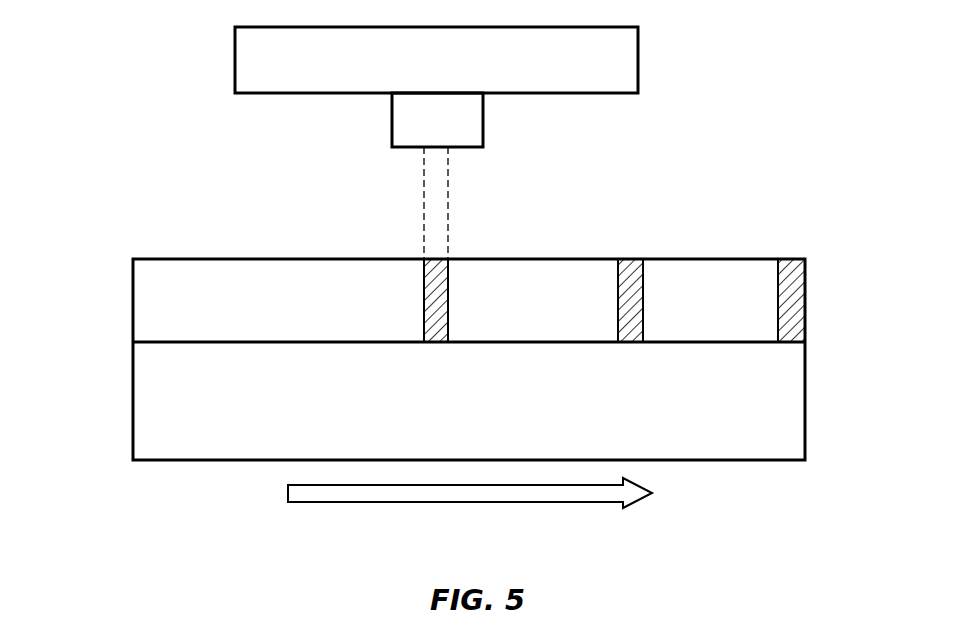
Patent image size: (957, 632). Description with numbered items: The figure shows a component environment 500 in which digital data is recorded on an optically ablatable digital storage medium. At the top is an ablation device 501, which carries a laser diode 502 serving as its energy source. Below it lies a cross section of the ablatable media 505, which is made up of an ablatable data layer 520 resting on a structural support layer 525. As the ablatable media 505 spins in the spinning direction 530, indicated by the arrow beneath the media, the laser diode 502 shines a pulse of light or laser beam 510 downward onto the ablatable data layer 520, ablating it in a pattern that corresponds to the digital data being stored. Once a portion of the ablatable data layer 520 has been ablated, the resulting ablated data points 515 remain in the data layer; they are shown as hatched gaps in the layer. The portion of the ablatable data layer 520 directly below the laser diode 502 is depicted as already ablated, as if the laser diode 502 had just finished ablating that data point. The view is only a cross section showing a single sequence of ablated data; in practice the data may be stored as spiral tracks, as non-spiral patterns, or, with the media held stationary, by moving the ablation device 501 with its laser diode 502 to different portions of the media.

The environment 500 is at (452, 15).
The ablation device 501 is at (527, 70).
The laser diode 502 is at (392, 118).
The ablatable media 505 is at (132, 226).
The laser beam 510 is at (448, 205).
The ablated data points 515 is at (436, 259).
The ablatable data layer 520 is at (395, 311).
The structural support layer 525 is at (598, 410).
The spinning direction 530 is at (470, 517).